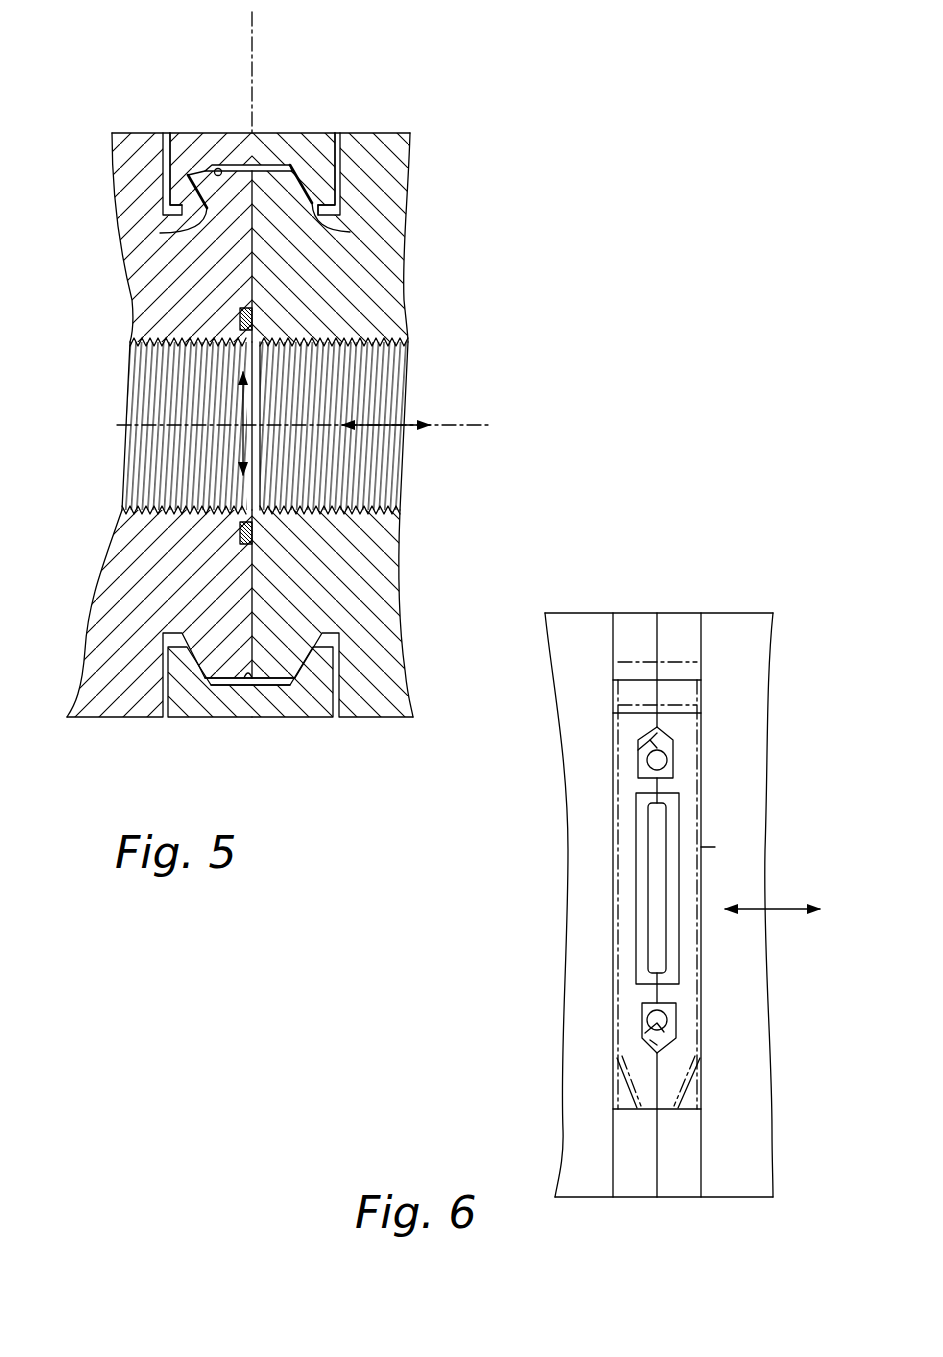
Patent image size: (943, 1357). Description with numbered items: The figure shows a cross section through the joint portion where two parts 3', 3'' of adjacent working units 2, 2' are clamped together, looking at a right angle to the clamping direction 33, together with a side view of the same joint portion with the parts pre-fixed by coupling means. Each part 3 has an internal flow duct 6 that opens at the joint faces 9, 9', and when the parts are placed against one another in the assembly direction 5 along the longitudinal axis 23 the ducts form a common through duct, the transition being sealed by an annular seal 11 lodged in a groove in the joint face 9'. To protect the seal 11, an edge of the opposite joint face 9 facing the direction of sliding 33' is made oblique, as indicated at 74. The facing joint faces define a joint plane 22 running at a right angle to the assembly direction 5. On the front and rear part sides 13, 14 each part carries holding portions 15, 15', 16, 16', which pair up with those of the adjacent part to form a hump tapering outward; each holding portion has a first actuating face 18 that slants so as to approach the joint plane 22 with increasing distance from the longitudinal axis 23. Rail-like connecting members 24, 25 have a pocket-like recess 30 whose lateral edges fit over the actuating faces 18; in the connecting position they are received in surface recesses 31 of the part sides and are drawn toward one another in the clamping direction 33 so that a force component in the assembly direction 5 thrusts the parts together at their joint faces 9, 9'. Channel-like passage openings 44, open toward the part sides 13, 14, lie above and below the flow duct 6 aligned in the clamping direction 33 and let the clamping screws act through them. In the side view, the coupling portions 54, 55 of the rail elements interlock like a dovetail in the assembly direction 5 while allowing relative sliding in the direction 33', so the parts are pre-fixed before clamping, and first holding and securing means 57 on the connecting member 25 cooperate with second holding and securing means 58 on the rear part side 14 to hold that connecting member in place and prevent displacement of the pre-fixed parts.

In FIG. 5, the working unit 2 is at (398, 700).
In FIG. 5, the working unit 2' is at (85, 700).
In FIG. 6, the working unit 2' is at (664, 1217).
In FIG. 5, the part 3 is at (252, 613).
In FIG. 5, the part 3' is at (366, 613).
In FIG. 6, the part 3' is at (631, 905).
In FIG. 5, the part 3'' is at (137, 613).
In FIG. 6, the part 3'' is at (775, 905).
In FIG. 5, the assembly direction 5 is at (382, 424).
In FIG. 6, the assembly direction 5 is at (784, 912).
In FIG. 5, the flow duct 6 is at (145, 370).
In FIG. 5, the joint face 9 is at (164, 256).
In FIG. 6, the joint face 9 is at (705, 912).
In FIG. 5, the joint face 9' is at (351, 469).
In FIG. 6, the joint face 9' is at (638, 685).
In FIG. 5, the seal 11 is at (240, 318).
In FIG. 5, the part side 13 is at (143, 727).
In FIG. 5, the part side 14 is at (113, 127).
In FIG. 5, the holding portion 15 is at (292, 727).
In FIG. 5, the holding portion 15' is at (210, 727).
In FIG. 5, the holding portion 16 is at (301, 146).
In FIG. 6, the holding portion 16 is at (602, 888).
In FIG. 5, the holding portion 16' is at (153, 140).
In FIG. 6, the holding portion 16' is at (706, 888).
In FIG. 6, the first actuating face 18 is at (672, 822).
In FIG. 5, the joint plane 22 is at (253, 28).
In FIG. 5, the longitudinal axis 23 is at (478, 412).
In FIG. 5, the connecting member 24 is at (297, 700).
In FIG. 5, the connecting member 25 is at (297, 140).
In FIG. 6, the connecting member 25 is at (701, 847).
In FIG. 5, the pocket-like recess 30 is at (215, 200).
In FIG. 6, the surface recess 31 is at (693, 628).
In FIG. 5, the clamping direction 33 is at (141, 423).
In FIG. 5, the direction of sliding 33' is at (141, 423).
In FIG. 6, the passage opening 44 is at (664, 762).
In FIG. 6, the coupling portion 54 is at (649, 753).
In FIG. 6, the coupling portion 55 is at (645, 733).
In FIG. 6, the first holding and securing means 57 is at (697, 670).
In FIG. 6, the second holding and securing means 58 is at (633, 695).
In FIG. 5, the oblique face 74 is at (249, 161).